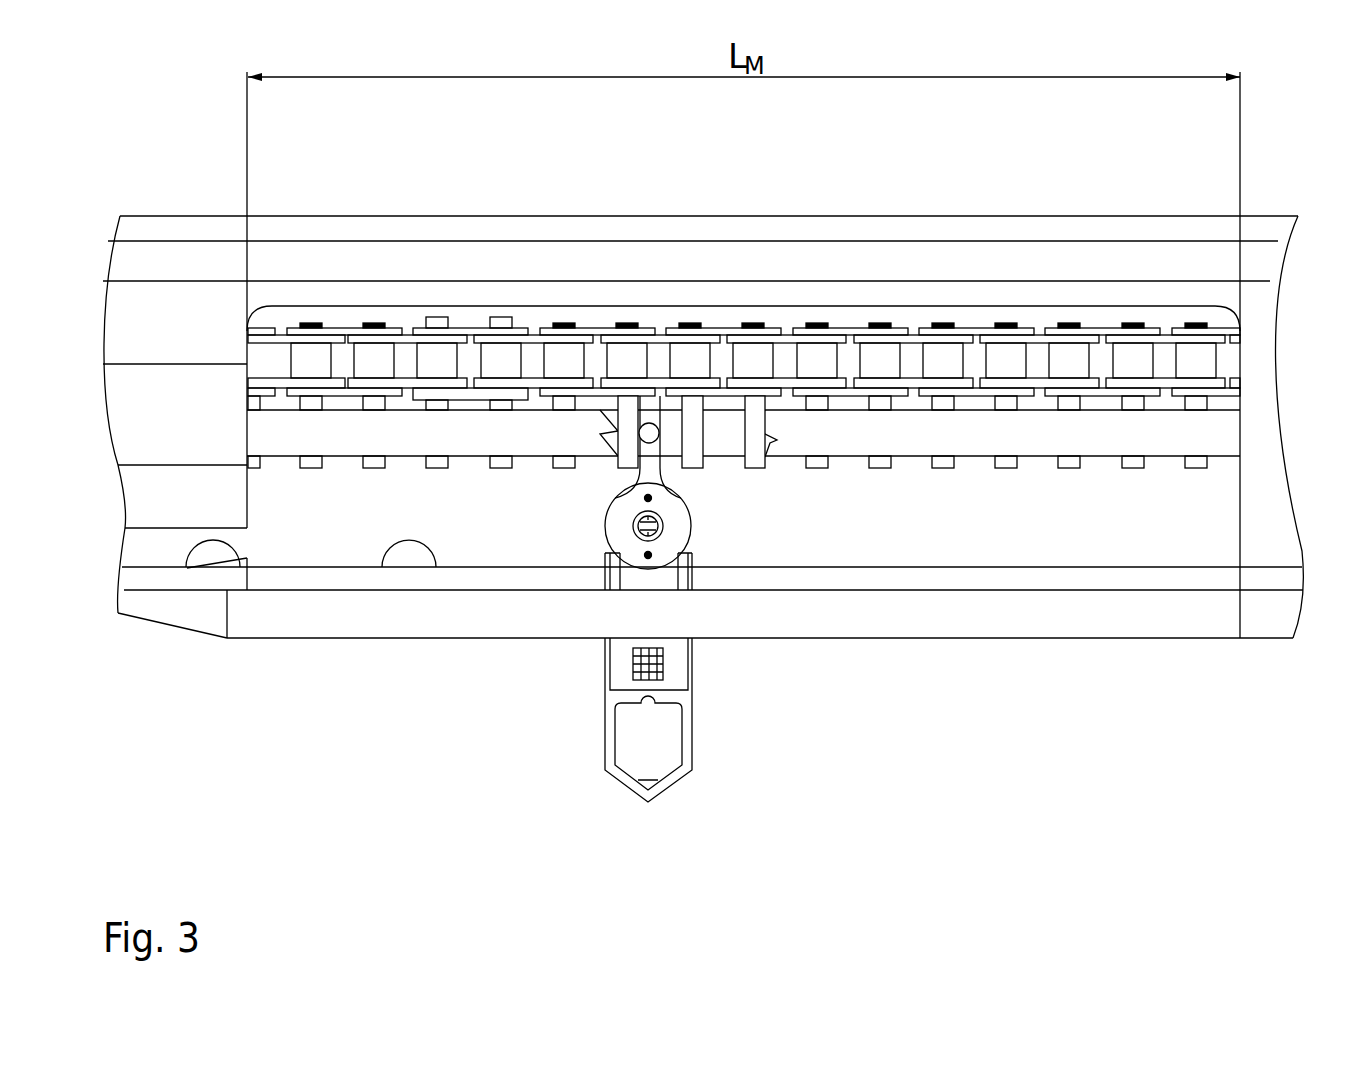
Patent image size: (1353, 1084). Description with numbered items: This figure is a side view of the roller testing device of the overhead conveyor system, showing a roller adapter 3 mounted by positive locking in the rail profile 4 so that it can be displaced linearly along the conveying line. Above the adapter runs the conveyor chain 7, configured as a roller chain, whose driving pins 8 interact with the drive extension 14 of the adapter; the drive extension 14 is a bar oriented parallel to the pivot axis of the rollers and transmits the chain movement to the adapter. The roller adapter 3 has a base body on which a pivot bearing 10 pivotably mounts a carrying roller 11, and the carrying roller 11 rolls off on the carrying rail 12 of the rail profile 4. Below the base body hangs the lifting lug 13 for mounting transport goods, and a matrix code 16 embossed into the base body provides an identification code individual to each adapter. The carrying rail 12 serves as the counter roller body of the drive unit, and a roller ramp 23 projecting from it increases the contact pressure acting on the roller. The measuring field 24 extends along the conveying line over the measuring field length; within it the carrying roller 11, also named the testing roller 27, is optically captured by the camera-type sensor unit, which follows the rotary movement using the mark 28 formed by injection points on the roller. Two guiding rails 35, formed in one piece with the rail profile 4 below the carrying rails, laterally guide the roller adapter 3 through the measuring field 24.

The roller adapter 3 is at (690, 784).
The rail profile 4 is at (1003, 232).
The conveyor chain 7 is at (566, 355).
The driving pins 8 is at (628, 408).
The pivot bearing 10 is at (633, 531).
The carrying roller 11 is at (637, 556).
The carrying rail 12 is at (383, 567).
The lifting lug 13 is at (653, 795).
The drive extension 14 is at (650, 426).
The matrix code 16 is at (650, 557).
The roller ramp 23 is at (187, 567).
The measuring field 24 is at (1103, 543).
The testing roller 27 is at (609, 703).
The mark 28 is at (650, 500).
The guiding rails 35 is at (298, 622).